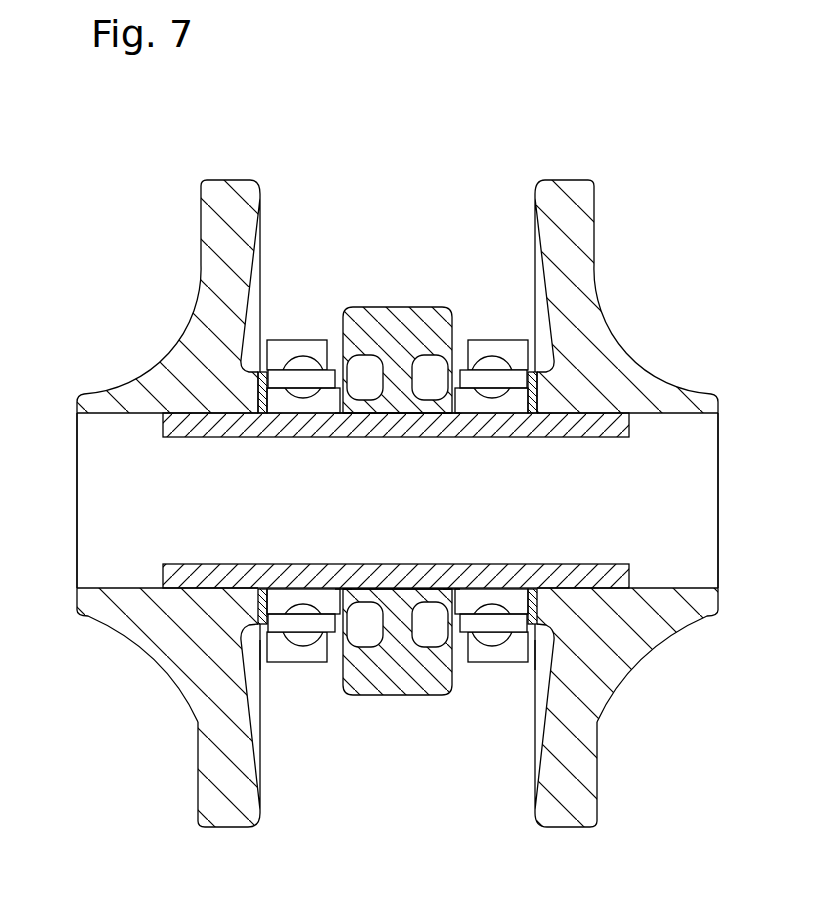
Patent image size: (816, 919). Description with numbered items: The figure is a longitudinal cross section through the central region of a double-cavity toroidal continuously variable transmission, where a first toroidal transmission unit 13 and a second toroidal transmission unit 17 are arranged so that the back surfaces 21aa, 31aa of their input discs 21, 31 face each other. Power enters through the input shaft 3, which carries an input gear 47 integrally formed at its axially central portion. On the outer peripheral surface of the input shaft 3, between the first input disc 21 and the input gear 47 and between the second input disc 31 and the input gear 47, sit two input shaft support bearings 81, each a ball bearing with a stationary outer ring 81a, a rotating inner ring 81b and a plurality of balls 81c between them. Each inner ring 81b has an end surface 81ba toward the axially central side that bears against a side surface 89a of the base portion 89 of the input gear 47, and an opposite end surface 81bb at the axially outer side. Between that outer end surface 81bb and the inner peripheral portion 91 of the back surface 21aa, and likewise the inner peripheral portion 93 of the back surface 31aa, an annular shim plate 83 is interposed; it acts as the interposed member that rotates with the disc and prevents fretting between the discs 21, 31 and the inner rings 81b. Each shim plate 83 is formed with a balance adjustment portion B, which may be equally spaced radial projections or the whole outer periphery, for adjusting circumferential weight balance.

The first toroidal transmission unit 13 is at (73, 281).
The second toroidal transmission unit 17 is at (643, 244).
The first input disc 21 is at (229, 467).
The back surface of the first input disc 21aa is at (265, 213).
The second input disc 31 is at (574, 468).
The back surface of the second input disc 31aa is at (522, 213).
The input shaft 3 is at (268, 430).
The input gear 47 is at (398, 446).
The base portion of the input gear 89 is at (398, 493).
The side surface of the base portion 89a is at (337, 404).
The input shaft support bearing 81 is at (411, 499).
The outer ring 81a is at (290, 350).
The inner ring 81b is at (411, 526).
The end surface of the inner ring 81ba is at (356, 372).
The end surface of the inner ring 81bb is at (258, 385).
The balls 81c is at (305, 363).
The inner peripheral portion of the back surface of the first input disc 91 is at (252, 403).
The inner peripheral portion of the back surface of the second input disc 93 is at (543, 405).
The shim plate 83 is at (258, 603).
The balance adjustment portion B is at (263, 655).